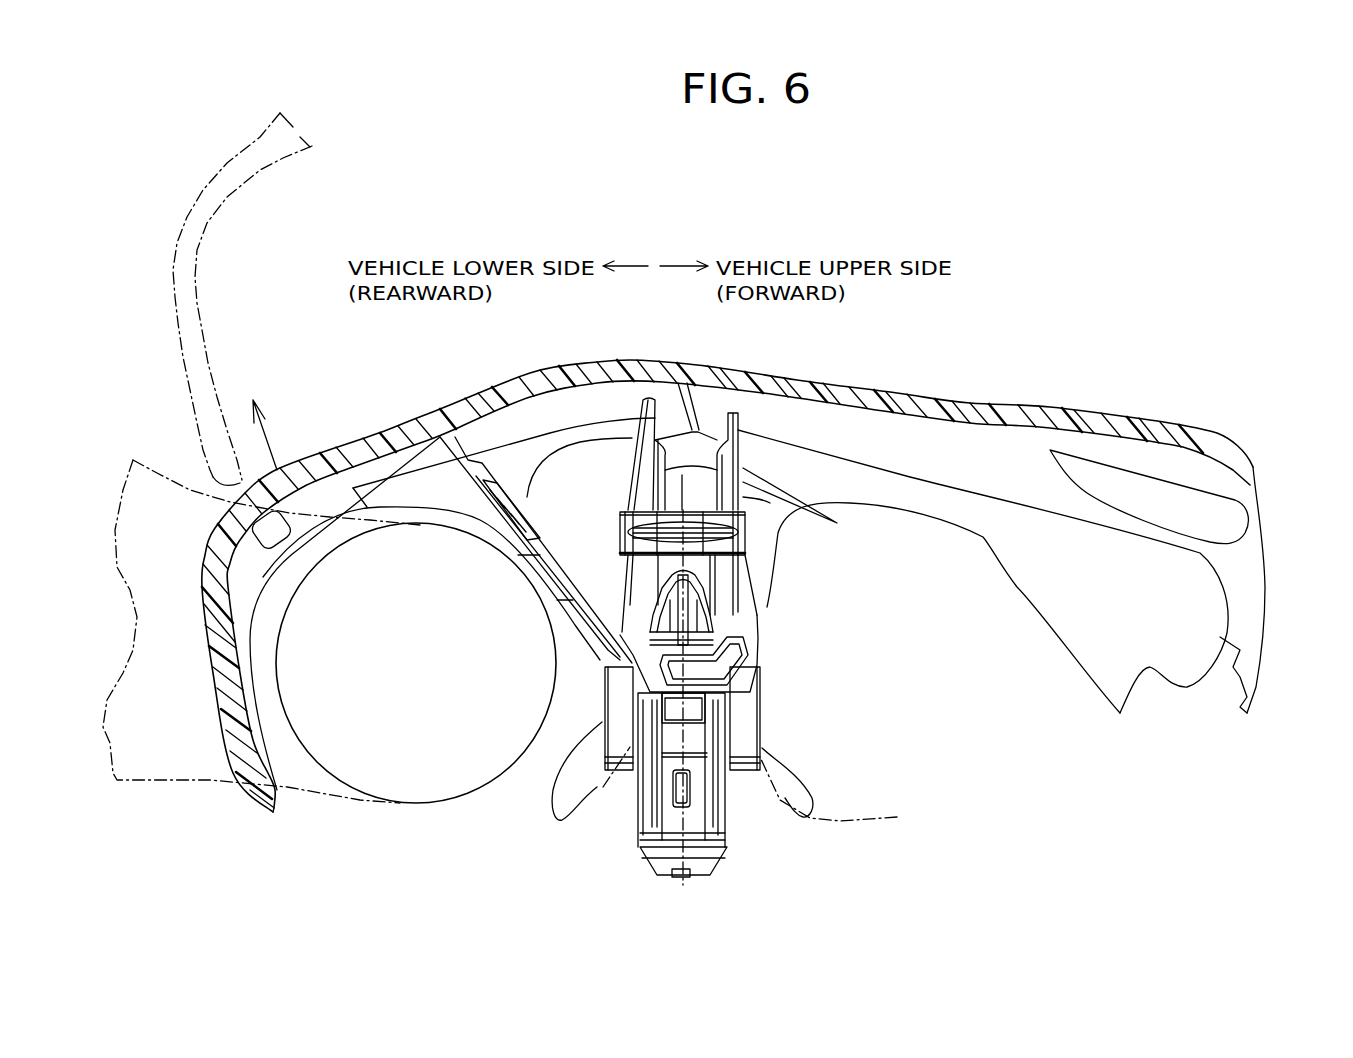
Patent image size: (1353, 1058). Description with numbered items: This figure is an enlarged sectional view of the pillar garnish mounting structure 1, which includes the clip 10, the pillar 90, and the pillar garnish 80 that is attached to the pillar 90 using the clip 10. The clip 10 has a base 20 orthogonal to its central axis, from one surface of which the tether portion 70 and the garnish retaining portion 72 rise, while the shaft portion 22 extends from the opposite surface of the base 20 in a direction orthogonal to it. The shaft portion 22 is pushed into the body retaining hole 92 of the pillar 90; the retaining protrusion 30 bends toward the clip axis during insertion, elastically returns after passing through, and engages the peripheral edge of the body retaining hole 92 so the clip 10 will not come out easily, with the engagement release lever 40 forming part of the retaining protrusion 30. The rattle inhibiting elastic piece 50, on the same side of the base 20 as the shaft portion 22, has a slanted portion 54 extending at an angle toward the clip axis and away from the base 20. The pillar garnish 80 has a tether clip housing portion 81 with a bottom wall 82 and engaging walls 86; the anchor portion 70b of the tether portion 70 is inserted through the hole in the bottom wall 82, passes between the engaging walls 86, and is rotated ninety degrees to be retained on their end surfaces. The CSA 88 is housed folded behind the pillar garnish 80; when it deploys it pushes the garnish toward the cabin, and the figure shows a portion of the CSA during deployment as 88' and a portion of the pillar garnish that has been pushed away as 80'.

The pillar garnish mounting structure 1 is at (950, 381).
The clip 10 is at (740, 833).
The base 20 is at (612, 660).
The shaft portion 22 is at (727, 847).
The retaining protrusion 30 is at (690, 767).
The engagement release lever 40 is at (690, 707).
The rattle inhibiting elastic piece 50 is at (605, 724).
The slanted portion 54 is at (623, 757).
The tether portion 70 is at (700, 567).
The anchor portion 70b is at (746, 537).
The garnish retaining portion 72 is at (717, 603).
The pillar garnish 80 is at (727, 553).
The pushed-away portion of pillar garnish 80' is at (259, 299).
The tether clip housing portion 81 is at (747, 587).
The bottom wall 82 is at (763, 647).
The engaging walls 86 is at (807, 505).
The CSA 88 is at (425, 646).
The portion of CSA during deployment 88' is at (261, 645).
The pillar 90 is at (766, 791).
The body retaining hole 92 is at (657, 785).